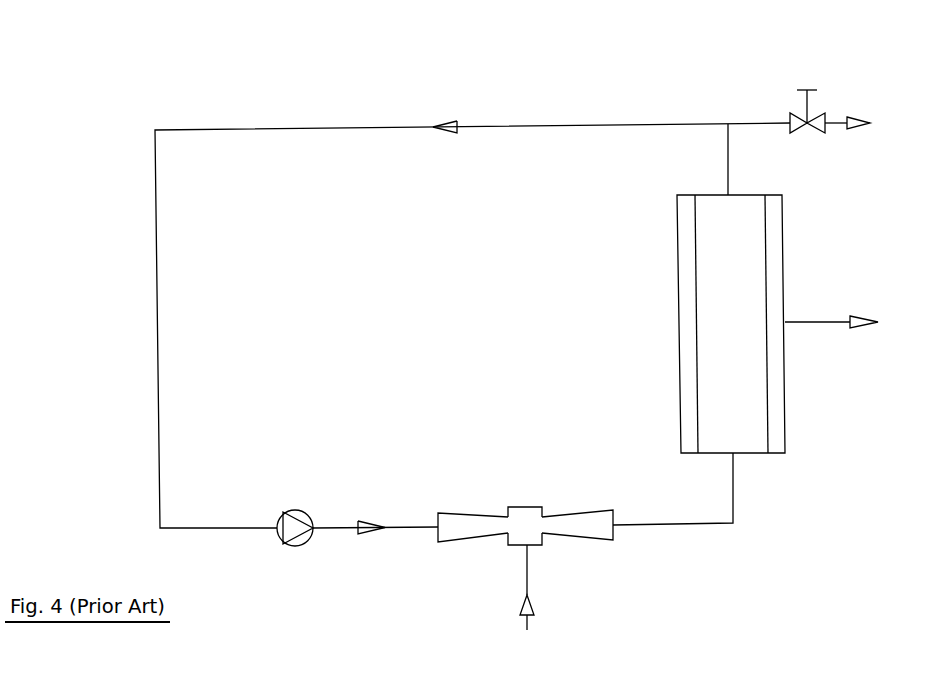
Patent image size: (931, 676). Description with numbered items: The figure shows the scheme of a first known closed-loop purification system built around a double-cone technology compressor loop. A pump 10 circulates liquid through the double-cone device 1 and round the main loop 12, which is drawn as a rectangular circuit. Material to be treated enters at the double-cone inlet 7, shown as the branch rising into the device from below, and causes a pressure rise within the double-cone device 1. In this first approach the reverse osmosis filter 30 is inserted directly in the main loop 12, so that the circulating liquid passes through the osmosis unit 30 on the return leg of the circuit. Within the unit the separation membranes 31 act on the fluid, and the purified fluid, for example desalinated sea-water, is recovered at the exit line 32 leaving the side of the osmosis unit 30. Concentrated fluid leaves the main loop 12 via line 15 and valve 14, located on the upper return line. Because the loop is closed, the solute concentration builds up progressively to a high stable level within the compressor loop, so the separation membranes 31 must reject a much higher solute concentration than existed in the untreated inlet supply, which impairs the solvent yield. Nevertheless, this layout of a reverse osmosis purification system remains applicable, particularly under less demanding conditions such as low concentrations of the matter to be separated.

The double-cone device 1 is at (475, 538).
The double-cone inlet 7 is at (527, 545).
The pump 10 is at (282, 537).
The main loop 12 is at (155, 250).
The valve 14 is at (795, 115).
The line 15 is at (837, 120).
The reverse osmosis filter 30 is at (785, 418).
The separation membranes 31 is at (766, 230).
The exit line 32 is at (797, 320).